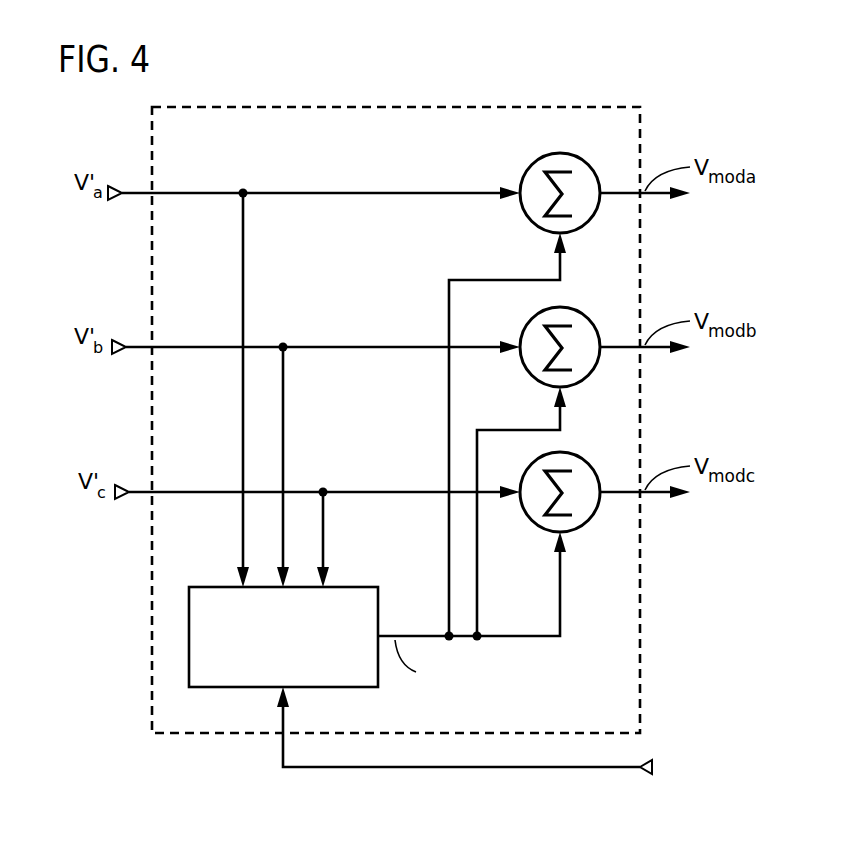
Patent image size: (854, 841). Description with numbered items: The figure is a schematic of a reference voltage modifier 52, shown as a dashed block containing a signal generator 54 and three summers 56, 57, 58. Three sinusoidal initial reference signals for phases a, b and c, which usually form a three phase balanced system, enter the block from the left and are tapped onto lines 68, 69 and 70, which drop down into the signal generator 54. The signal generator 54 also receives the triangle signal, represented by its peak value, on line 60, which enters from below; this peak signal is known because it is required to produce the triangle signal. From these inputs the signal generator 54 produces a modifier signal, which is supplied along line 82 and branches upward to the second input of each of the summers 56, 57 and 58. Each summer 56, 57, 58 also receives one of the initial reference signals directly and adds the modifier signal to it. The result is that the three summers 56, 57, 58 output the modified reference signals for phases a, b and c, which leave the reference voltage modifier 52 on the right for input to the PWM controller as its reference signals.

The reference voltage modifier 52 is at (263, 136).
The signal generator 54 is at (364, 675).
The summer 56 is at (588, 165).
The summer 57 is at (588, 319).
The summer 58 is at (588, 464).
The line 60 is at (470, 769).
The line 68 is at (243, 512).
The line 69 is at (283, 533).
The line 70 is at (324, 531).
The line 82 is at (525, 640).